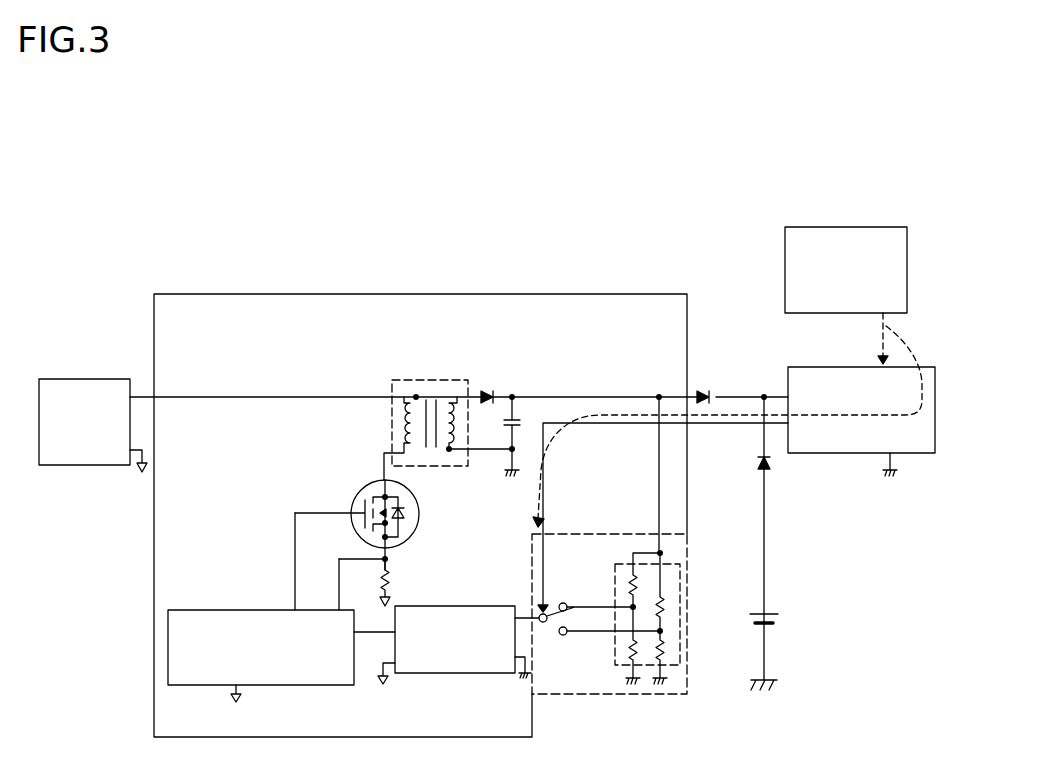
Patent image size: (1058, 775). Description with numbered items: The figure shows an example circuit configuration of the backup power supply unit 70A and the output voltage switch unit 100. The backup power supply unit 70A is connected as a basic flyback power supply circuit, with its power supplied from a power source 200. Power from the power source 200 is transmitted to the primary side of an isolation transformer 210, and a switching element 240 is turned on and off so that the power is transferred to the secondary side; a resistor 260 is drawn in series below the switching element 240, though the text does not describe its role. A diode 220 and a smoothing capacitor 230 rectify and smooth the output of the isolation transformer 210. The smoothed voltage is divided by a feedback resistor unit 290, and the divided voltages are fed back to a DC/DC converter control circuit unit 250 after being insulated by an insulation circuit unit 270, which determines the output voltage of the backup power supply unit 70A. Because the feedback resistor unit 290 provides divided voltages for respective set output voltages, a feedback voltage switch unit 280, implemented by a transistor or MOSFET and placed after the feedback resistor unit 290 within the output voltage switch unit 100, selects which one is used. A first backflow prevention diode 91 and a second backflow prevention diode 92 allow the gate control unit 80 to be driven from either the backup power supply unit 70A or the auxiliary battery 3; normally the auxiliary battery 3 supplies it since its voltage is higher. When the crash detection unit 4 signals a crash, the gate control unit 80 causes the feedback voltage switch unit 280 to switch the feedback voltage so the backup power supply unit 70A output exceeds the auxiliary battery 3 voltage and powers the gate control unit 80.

The auxiliary battery 3 is at (790, 636).
The crash detection unit 4 is at (827, 269).
The backup power supply unit 70A is at (420, 492).
The gate control unit 80 is at (734, 420).
The first backflow prevention diode 91 is at (721, 366).
The second backflow prevention diode 92 is at (736, 478).
The output voltage switch unit 100 is at (609, 652).
The power source 200 is at (93, 402).
The isolation transformer 210 is at (448, 402).
The diode 220 is at (467, 363).
The smoothing capacitor 230 is at (530, 412).
The switching element 240 is at (357, 507).
The DC/DC converter control circuit unit 250 is at (281, 607).
The resistor 260 is at (398, 579).
The insulation circuit unit 270 is at (458, 627).
The feedback voltage switch unit 280 is at (599, 646).
The feedback resistor unit 290 is at (678, 617).